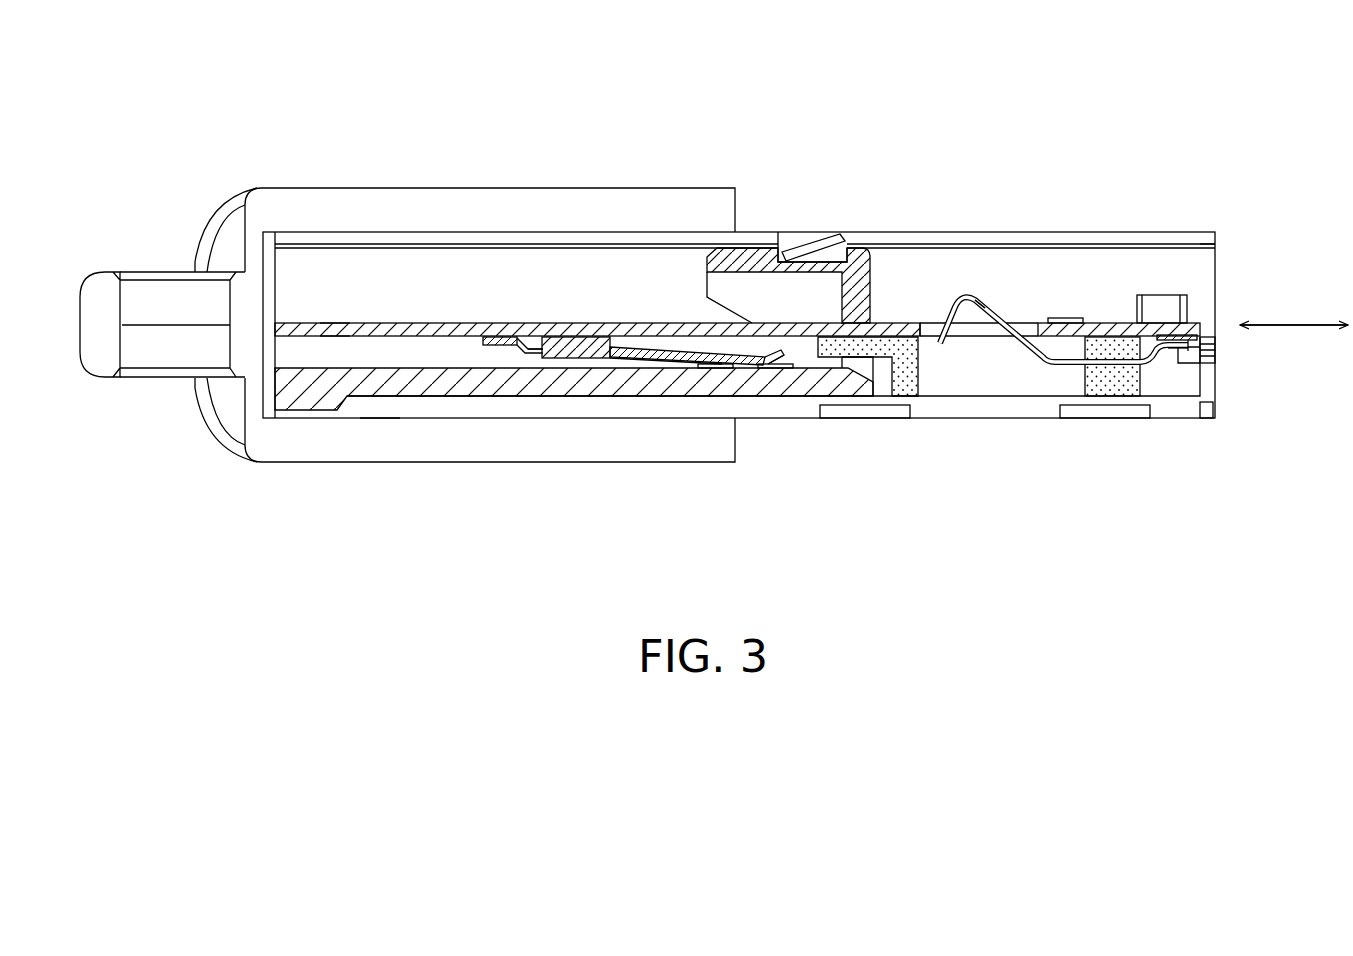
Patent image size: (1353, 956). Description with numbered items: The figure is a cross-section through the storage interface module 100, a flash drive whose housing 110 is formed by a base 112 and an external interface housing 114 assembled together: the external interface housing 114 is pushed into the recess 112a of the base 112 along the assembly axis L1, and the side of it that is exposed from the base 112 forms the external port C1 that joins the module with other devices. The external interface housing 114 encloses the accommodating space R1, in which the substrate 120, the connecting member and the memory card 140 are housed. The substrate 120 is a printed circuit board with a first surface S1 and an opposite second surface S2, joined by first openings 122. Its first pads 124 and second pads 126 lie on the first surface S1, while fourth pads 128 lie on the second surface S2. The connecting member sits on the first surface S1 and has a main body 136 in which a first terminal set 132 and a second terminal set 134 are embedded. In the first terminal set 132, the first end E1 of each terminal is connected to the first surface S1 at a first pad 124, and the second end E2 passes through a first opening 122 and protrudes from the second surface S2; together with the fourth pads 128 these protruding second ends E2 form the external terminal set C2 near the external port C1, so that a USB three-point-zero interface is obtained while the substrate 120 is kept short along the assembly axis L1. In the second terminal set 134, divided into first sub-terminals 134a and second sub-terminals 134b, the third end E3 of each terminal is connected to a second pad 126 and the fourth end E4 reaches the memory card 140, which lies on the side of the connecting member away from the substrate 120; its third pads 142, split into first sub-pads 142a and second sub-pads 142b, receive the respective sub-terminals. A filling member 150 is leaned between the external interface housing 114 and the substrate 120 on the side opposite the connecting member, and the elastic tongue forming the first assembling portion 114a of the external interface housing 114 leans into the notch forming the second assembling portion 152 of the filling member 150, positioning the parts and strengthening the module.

The storage interface module 100 is at (1202, 580).
The housing 110 is at (702, 530).
The base 112 is at (595, 437).
The recess 112a is at (373, 417).
The external interface housing 114 is at (665, 412).
The first assembling portion 114a is at (797, 250).
The substrate 120 is at (420, 327).
The first opening 122 is at (928, 323).
The first pad 124 is at (1183, 303).
The second pad 126 is at (497, 337).
The fourth pad 128 is at (1060, 318).
The first terminal set 132 is at (1030, 347).
The second terminal set 134 is at (717, 134).
The first sub-terminals 134a is at (643, 347).
The second sub-terminals 134b is at (693, 357).
The main body 136 is at (912, 363).
The memory card 140 is at (480, 388).
The third pad 142 is at (838, 530).
The first sub-pads 142a is at (780, 368).
The second sub-pads 142b is at (712, 368).
The filling member 150 is at (870, 288).
The second assembling portion 152 is at (835, 256).
The first surface S1 is at (335, 339).
The second surface S2 is at (335, 321).
The first end E1 is at (1173, 350).
The second end E2 is at (985, 299).
The third end E3 is at (505, 349).
The fourth end E4 is at (761, 350).
The external port C1 is at (1216, 367).
The external terminal set C2 is at (1080, 187).
The accommodating space R1 is at (1196, 258).
The assembly axis L1 is at (1298, 323).